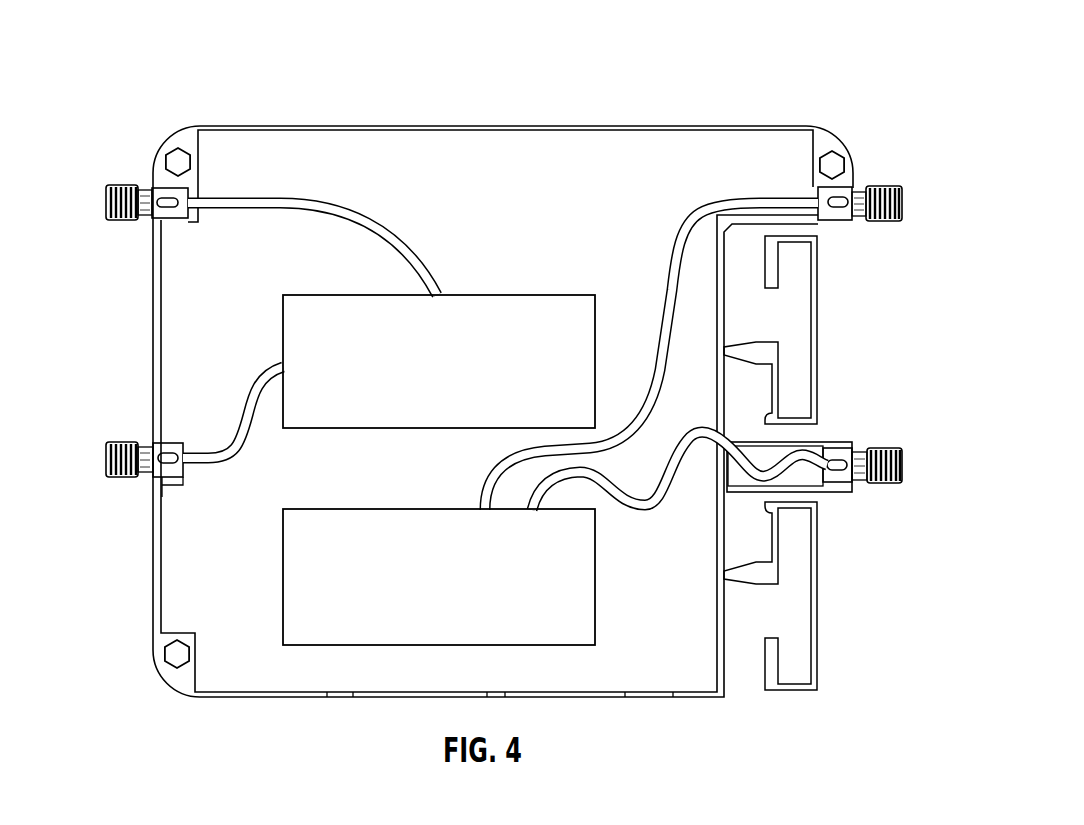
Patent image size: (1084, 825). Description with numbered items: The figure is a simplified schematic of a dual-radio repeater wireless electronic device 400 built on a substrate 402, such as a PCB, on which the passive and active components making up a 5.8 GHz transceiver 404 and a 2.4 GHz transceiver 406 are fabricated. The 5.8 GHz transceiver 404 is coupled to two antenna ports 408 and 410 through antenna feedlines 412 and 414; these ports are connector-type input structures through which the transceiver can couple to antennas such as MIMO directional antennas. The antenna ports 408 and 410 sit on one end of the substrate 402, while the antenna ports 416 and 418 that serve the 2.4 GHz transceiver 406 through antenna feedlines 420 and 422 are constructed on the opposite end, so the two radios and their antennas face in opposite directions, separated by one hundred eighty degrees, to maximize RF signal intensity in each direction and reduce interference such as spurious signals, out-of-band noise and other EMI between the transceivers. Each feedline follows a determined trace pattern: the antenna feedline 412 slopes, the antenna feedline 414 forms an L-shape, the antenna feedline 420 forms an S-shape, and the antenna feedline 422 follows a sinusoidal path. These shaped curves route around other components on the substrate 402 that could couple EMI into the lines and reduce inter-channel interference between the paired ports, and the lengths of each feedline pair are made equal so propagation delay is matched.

The dual-radio repeater wireless electronic device 400 is at (864, 41).
The substrate 402 is at (483, 125).
The 5.8 GHz transceiver 404 is at (352, 295).
The 2.4 GHz transceiver 406 is at (352, 509).
The antenna port 408 is at (128, 180).
The antenna port 410 is at (128, 437).
The antenna feedline 412 is at (263, 366).
The antenna feedline 414 is at (382, 223).
The antenna port 416 is at (881, 182).
The antenna port 418 is at (879, 437).
The antenna feedline 420 is at (690, 218).
The antenna feedline 422 is at (643, 508).